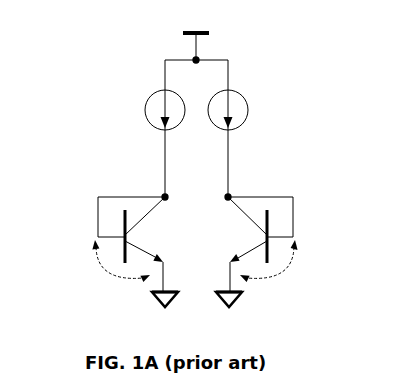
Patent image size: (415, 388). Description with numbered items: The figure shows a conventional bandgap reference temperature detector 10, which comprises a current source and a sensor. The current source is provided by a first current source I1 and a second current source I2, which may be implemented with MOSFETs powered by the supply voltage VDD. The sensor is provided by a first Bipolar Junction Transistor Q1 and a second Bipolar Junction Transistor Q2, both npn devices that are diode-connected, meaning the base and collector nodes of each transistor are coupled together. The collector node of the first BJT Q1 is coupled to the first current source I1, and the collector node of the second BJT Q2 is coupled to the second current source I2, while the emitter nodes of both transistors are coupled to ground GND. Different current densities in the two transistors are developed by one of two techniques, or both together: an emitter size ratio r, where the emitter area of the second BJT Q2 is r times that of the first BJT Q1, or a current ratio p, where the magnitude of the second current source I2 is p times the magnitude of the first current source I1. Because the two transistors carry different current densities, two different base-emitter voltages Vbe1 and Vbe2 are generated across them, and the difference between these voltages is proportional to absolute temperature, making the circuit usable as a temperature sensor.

The conventional temperature detector 10 is at (80, 77).
The supply voltage VDD is at (196, 38).
The ground GND is at (197, 310).
The first current source I1 is at (159, 128).
The second current source I2 is at (254, 128).
The first Bipolar Junction Transistor Q1 is at (129, 229).
The second Bipolar Junction Transistor Q2 is at (255, 243).
The base-emitter voltage of first BJT Vbe1 is at (112, 266).
The base-emitter voltage of second BJT Vbe2 is at (279, 266).